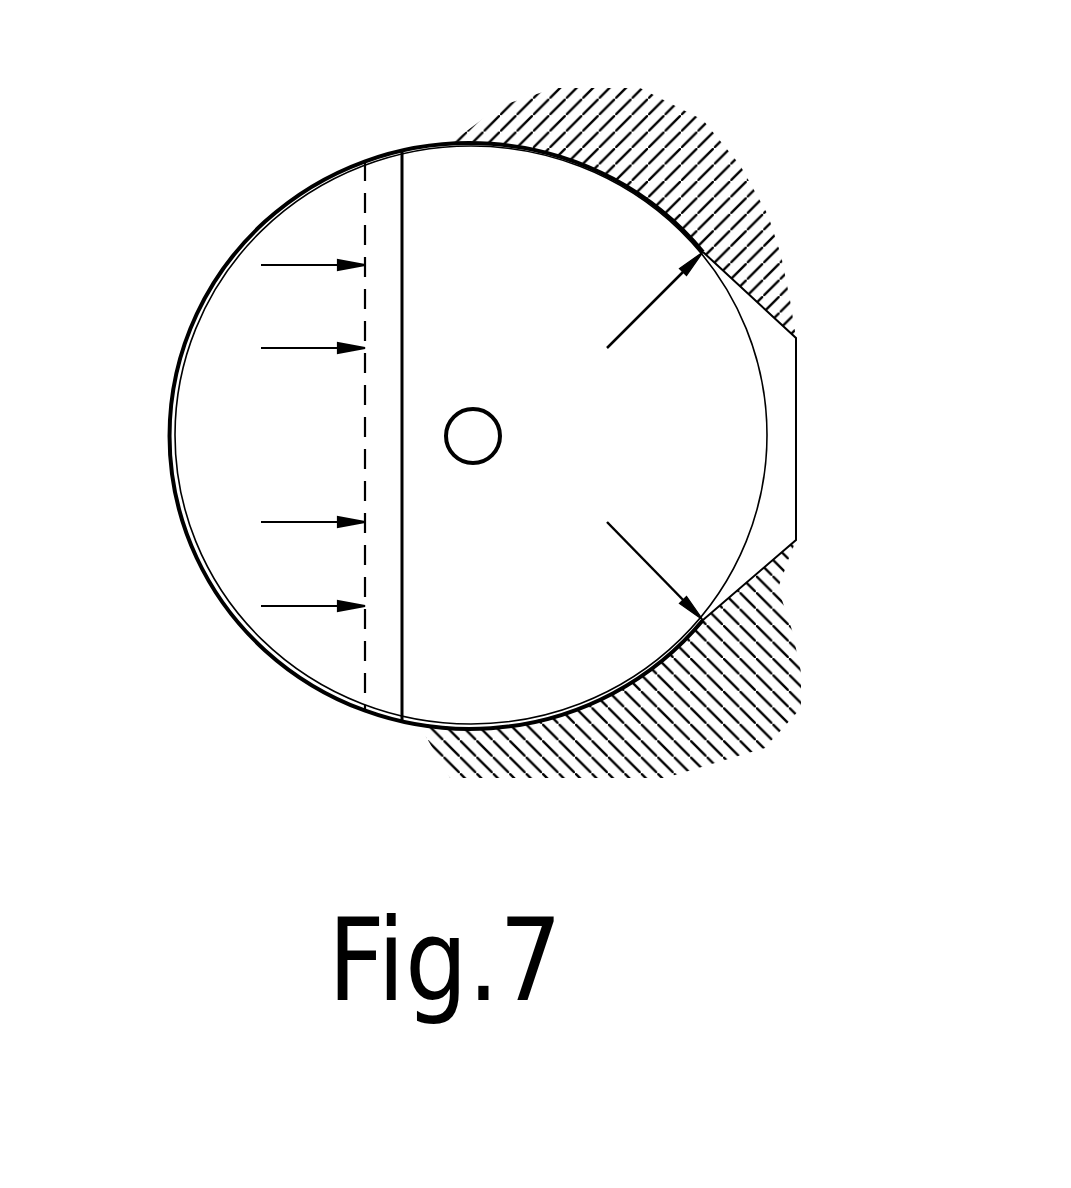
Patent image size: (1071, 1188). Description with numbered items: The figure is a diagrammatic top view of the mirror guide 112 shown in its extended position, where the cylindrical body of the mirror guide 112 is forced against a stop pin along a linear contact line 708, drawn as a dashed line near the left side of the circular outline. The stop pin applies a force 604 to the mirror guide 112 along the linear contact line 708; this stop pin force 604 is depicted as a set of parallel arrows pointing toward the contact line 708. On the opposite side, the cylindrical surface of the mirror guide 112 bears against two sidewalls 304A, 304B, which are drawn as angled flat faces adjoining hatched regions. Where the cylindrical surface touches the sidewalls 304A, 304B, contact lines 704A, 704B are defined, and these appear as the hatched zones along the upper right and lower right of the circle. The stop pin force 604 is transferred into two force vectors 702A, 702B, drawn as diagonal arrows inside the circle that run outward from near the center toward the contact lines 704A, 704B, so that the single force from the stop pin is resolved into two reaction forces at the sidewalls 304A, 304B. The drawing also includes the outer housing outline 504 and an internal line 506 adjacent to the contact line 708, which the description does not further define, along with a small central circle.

The outer housing wall 504 is at (307, 185).
The partition plate 506 is at (403, 203).
The stop pin force 604 is at (290, 348).
The mirror guide 112 is at (235, 617).
The linear contact line 708 is at (362, 657).
The force vector 702A is at (640, 556).
The force vector 702B is at (632, 322).
The contact line 704A is at (712, 616).
The contact line 704B is at (720, 235).
The sidewall 304A is at (770, 573).
The sidewall 304B is at (764, 312).